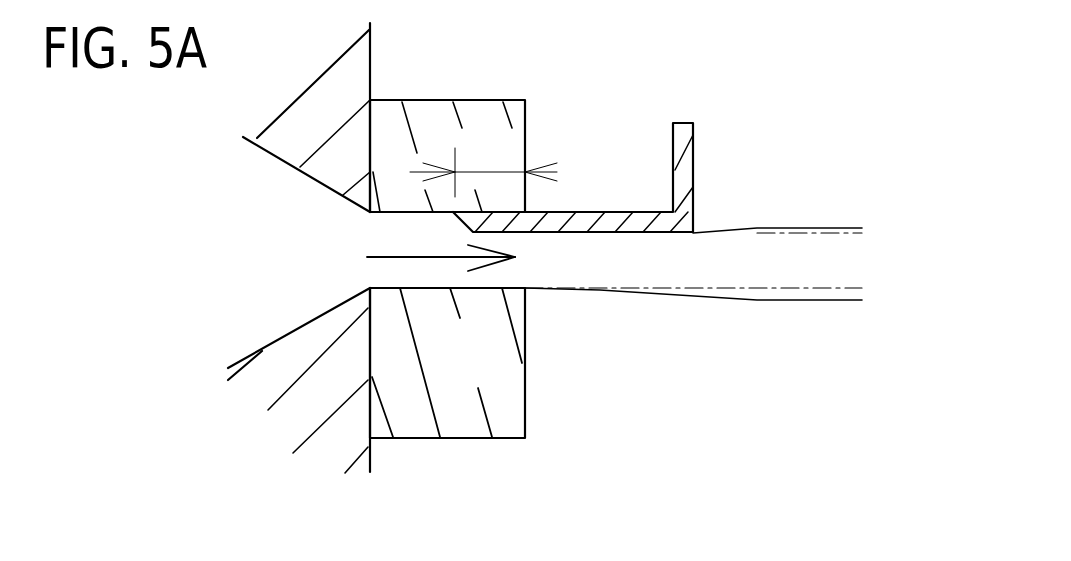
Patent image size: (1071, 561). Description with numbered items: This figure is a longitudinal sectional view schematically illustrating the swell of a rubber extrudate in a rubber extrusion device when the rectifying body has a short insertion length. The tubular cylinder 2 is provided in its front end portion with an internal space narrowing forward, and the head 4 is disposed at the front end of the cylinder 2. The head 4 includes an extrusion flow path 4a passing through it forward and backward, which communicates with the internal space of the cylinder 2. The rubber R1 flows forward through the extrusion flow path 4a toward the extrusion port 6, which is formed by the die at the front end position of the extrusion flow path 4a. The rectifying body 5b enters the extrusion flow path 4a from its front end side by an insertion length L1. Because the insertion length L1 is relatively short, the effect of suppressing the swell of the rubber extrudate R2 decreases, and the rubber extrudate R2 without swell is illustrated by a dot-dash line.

The cylinder 2 is at (362, 80).
The head 4 is at (487, 110).
The extrusion flow path 4a is at (393, 288).
The rectifying body 5b is at (602, 217).
The extrusion port 6 is at (523, 288).
The insertion length L1 is at (483, 165).
The rubber R1 is at (383, 256).
The rubber extrudate R2 is at (768, 272).